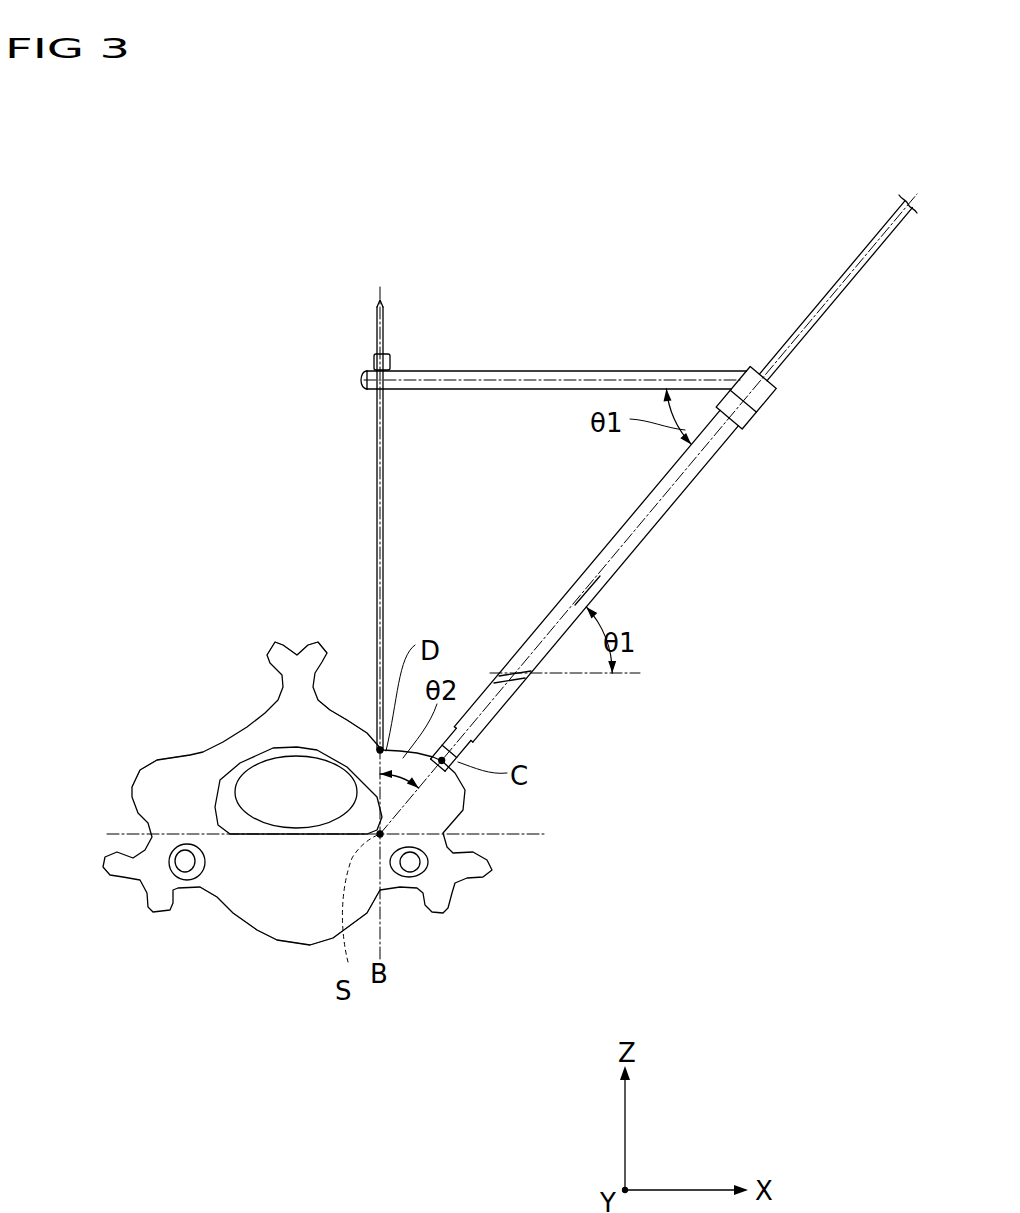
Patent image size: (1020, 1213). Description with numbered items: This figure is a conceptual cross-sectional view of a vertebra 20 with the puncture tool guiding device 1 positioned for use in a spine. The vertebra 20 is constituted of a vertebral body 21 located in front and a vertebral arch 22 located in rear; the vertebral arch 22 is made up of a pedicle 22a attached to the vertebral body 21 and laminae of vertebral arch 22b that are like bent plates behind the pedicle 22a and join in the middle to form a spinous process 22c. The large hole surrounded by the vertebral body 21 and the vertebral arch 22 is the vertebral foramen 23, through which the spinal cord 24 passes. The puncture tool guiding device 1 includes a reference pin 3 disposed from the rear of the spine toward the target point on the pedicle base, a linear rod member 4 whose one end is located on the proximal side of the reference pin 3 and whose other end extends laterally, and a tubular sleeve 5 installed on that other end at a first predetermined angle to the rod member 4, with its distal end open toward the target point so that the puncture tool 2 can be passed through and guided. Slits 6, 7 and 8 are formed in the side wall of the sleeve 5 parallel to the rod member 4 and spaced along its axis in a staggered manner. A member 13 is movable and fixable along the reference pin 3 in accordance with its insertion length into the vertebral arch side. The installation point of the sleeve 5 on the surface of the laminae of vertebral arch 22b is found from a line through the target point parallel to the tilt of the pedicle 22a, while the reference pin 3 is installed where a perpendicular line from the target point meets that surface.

The puncture tool guiding device 1 is at (642, 549).
The puncture tool 2 is at (855, 262).
The reference pin 3 is at (375, 462).
The linear rod member 4 is at (548, 370).
The tubular sleeve 5 is at (681, 487).
The slit 6 is at (476, 738).
The slit 7 is at (533, 680).
The slit 8 is at (590, 598).
The member 13 is at (386, 352).
The vertebra 20 is at (190, 932).
The vertebral body 21 is at (290, 913).
The vertebral arch 22 is at (172, 758).
The pedicle 22a is at (165, 803).
The laminae of vertebral arch 22b is at (343, 720).
The spinous process 22c is at (287, 641).
The vertebral foramen 23 is at (228, 807).
The spinal cord 24 is at (287, 773).